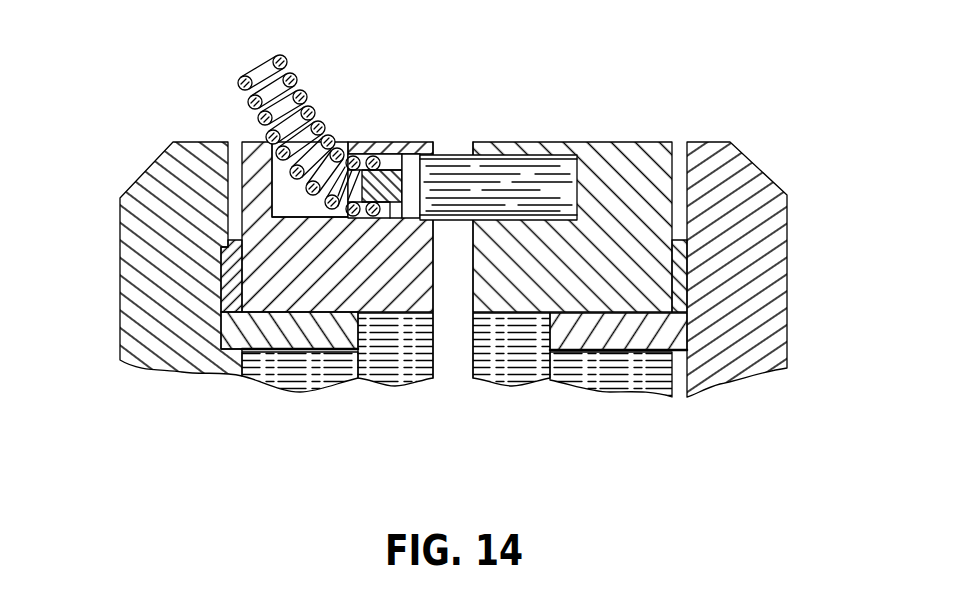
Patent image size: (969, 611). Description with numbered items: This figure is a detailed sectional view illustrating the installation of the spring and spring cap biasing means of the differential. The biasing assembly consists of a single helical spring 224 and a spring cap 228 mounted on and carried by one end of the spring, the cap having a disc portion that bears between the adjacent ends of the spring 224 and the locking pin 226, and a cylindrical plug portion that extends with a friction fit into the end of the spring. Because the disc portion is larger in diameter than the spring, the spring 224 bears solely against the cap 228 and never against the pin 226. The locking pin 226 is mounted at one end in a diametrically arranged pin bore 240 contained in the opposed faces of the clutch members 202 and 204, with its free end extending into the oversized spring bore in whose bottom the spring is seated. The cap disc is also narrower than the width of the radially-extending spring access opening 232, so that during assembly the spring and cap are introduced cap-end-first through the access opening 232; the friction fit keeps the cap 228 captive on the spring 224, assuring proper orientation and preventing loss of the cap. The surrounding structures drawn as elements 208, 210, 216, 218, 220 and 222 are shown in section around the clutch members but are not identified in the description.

The clutch member 202 is at (262, 228).
The clutch member 204 is at (667, 182).
The left housing section 208 is at (143, 315).
The right housing section 210 is at (767, 237).
The retainer 216 is at (228, 292).
The retaining ring 218 is at (681, 293).
The bushing 220 is at (320, 336).
The retainer plate 222 is at (687, 330).
The helical spring 224 is at (292, 79).
The locking pin 226 is at (552, 177).
The spring cap 228 is at (400, 153).
The spring access opening 232 is at (338, 141).
The pin bore 240 is at (285, 185).